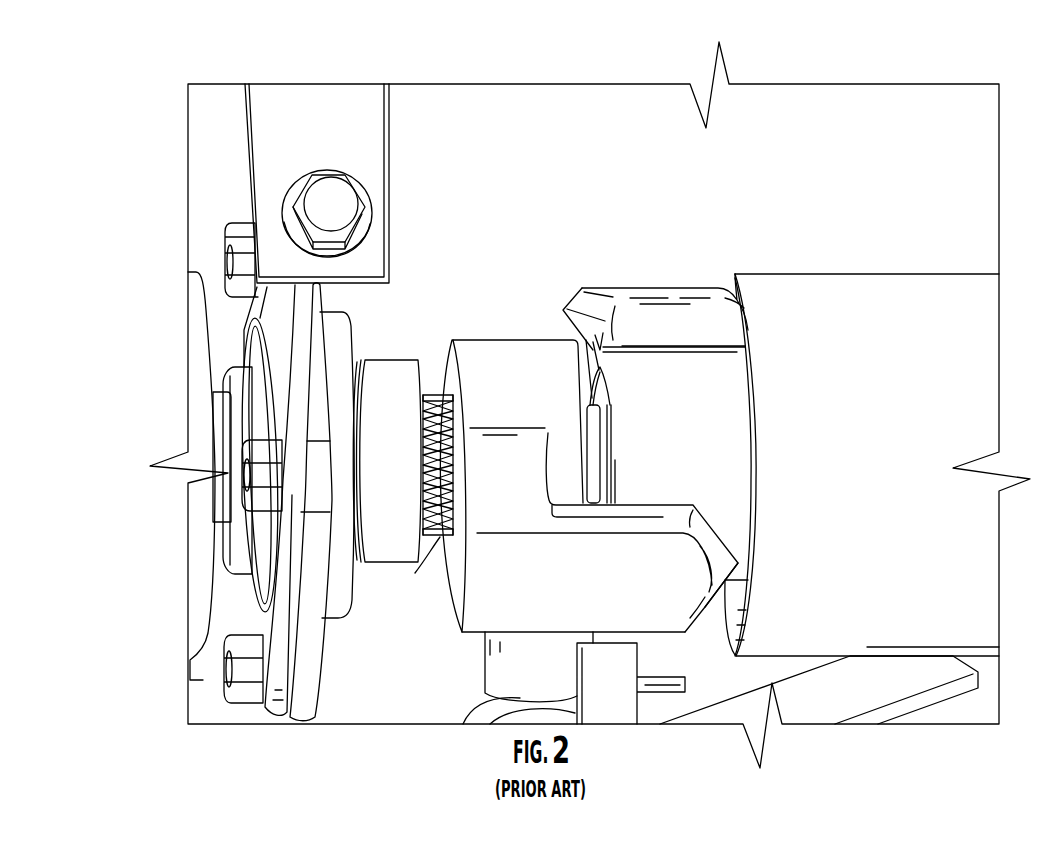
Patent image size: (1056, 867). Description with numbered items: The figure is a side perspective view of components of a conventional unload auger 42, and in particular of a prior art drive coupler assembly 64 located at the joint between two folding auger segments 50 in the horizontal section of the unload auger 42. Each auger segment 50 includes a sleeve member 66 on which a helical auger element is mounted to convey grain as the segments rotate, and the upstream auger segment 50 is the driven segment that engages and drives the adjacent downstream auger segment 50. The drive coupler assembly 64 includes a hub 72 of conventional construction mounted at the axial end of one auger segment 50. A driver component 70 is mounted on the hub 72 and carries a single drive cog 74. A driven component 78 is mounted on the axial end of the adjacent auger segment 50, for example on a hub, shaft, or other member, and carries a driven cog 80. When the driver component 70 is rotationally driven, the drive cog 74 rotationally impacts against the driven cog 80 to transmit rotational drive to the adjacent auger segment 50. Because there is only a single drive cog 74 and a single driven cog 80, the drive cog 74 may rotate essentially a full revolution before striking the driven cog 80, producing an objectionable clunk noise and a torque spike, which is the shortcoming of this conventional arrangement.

The unload auger 42 is at (818, 120).
The auger segment 50 is at (203, 305).
The drive coupler assembly 64 is at (512, 295).
The sleeve member 66 is at (778, 272).
The driver component 70 is at (473, 340).
The hub 72 is at (433, 575).
The drive cog 74 is at (673, 600).
The driven component 78 is at (722, 466).
The driven cog 80 is at (655, 285).